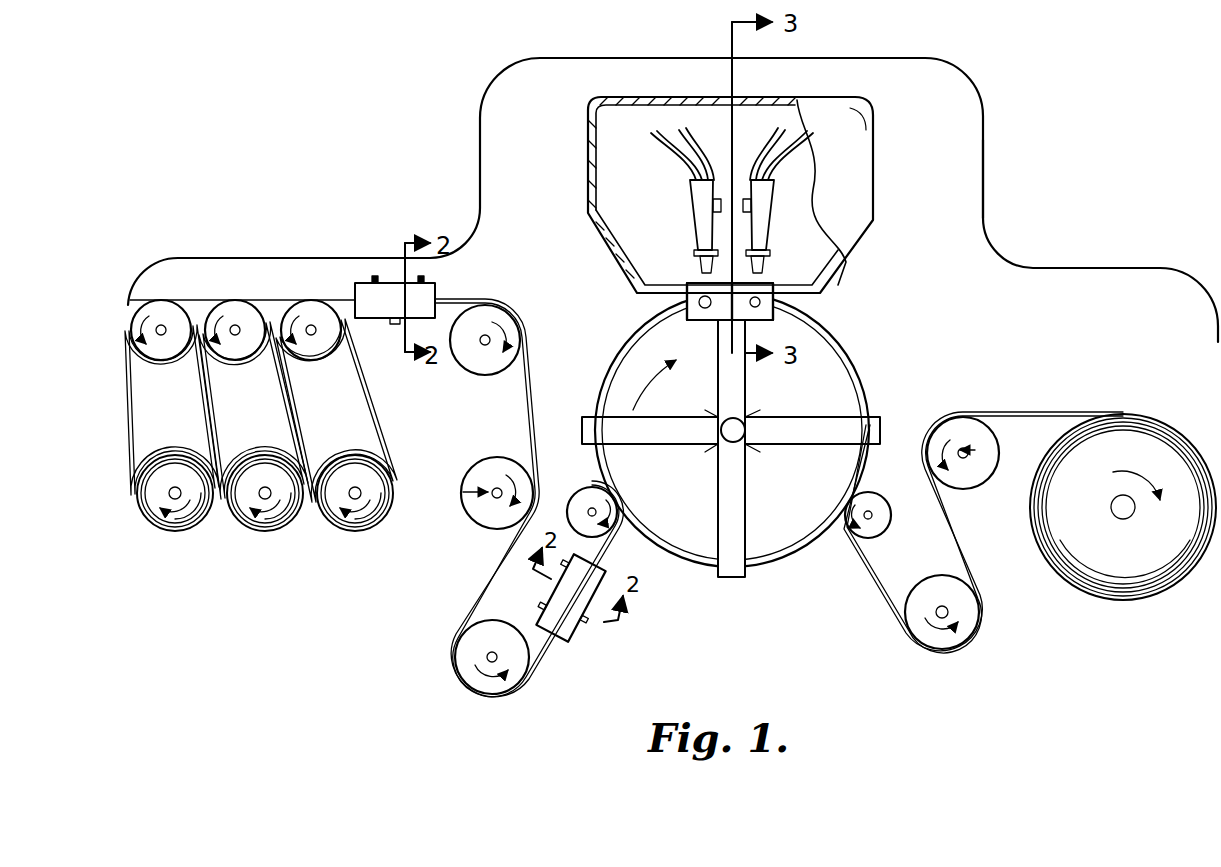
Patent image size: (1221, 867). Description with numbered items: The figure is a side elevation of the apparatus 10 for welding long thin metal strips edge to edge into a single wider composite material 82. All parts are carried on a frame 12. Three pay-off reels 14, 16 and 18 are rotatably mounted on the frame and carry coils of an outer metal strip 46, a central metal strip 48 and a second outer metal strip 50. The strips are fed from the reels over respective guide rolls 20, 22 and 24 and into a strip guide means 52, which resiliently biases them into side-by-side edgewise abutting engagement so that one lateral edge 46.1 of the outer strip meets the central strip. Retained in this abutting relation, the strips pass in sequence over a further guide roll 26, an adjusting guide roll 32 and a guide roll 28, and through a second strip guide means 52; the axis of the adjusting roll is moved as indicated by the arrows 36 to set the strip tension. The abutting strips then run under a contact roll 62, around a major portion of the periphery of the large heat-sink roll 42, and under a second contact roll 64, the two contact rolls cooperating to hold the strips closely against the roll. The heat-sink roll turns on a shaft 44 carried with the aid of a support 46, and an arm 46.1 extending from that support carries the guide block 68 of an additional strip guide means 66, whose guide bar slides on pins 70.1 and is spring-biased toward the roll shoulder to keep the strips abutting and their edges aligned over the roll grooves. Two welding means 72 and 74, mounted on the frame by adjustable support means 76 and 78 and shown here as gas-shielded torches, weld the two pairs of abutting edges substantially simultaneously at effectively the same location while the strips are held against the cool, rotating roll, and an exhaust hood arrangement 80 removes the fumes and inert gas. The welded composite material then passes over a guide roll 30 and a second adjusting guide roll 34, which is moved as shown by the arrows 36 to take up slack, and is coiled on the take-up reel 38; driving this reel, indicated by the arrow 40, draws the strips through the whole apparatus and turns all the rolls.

The apparatus 10 is at (985, 130).
The frame 12 is at (964, 226).
The pay-off reel 14 is at (170, 518).
The pay-off reel 16 is at (250, 518).
The pay-off reel 18 is at (342, 518).
The guide roll 20 is at (152, 356).
The guide roll 22 is at (226, 356).
The guide roll 24 is at (303, 356).
The guide roll 26 is at (470, 352).
The guide roll 28 is at (470, 688).
The guide roll 30 is at (934, 640).
The adjusting guide roll 32 is at (480, 514).
The adjusting guide roll 34 is at (968, 484).
The arrows 36 is at (470, 485).
The take-up reel 38 is at (1140, 576).
The arrow 40 is at (1152, 500).
The heat-sink roll 42 is at (768, 522).
The shaft 44 is at (742, 446).
The metal strip / roll support 46 is at (128, 438).
The lateral edge / arm 46.1 is at (737, 387).
The metal strip 48 is at (216, 432).
The metal strip 50 is at (300, 436).
The strip guide means 52 is at (441, 284).
The contact roll 62 is at (582, 494).
The contact roll 64 is at (892, 512).
The strip guide means 66 is at (683, 298).
The guide block 68 is at (776, 311).
The pins 70.1 is at (762, 298).
The welding means 72 is at (688, 192).
The welding means 74 is at (772, 194).
The support means 76 is at (690, 213).
The support means 78 is at (770, 214).
The exhaust hood arrangement 80 is at (860, 138).
The composite material 82 is at (1040, 412).